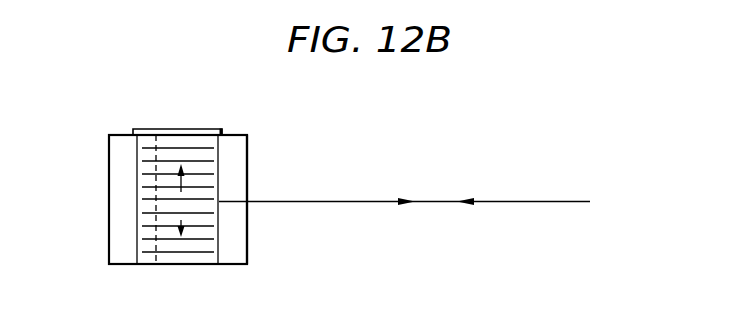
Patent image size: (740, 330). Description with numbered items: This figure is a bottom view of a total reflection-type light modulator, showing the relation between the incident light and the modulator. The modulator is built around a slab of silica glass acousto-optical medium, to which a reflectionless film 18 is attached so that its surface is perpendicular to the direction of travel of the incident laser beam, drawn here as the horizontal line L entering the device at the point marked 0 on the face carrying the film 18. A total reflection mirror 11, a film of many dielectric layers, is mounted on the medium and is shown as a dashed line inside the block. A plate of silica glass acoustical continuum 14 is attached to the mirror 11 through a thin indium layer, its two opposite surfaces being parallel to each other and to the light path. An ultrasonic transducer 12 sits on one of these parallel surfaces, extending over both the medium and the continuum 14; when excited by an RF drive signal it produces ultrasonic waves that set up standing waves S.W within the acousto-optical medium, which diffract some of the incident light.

The ultrasonic transducer 12 is at (210, 128).
The acoustical continuum 14 is at (137, 195).
The total reflection mirror 11 is at (156, 257).
The reflectionless film 18 is at (247, 253).
The origin point 0 is at (247, 202).
The standing waves S.W is at (181, 192).
The light beam line L is at (531, 201).